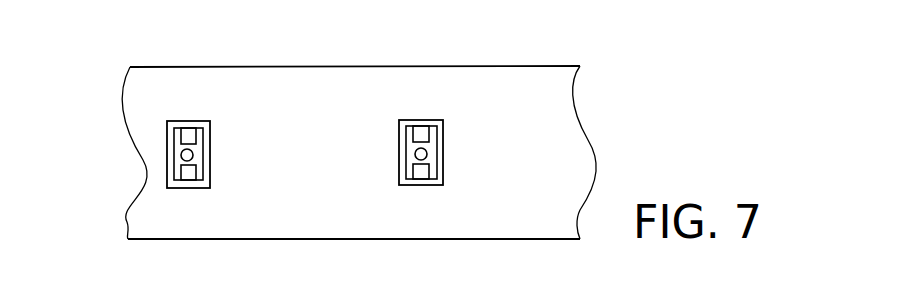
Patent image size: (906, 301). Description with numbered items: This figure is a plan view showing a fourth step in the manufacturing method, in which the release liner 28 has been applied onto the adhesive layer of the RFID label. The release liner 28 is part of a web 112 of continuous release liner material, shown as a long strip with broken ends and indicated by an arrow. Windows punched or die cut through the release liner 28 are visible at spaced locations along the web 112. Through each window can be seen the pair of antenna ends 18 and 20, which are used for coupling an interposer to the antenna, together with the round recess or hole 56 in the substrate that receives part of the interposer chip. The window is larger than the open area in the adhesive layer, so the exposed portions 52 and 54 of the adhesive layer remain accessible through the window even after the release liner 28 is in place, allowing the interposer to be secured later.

The release liner 28 is at (302, 95).
The web of continuous release liner material 112 is at (602, 82).
The exposed portion of the adhesive layer 52 is at (185, 124).
The exposed portion of the adhesive layer 54 is at (190, 185).
The antenna end 18 is at (182, 137).
The recess or hole 56 is at (181, 155).
The antenna end 20 is at (183, 173).